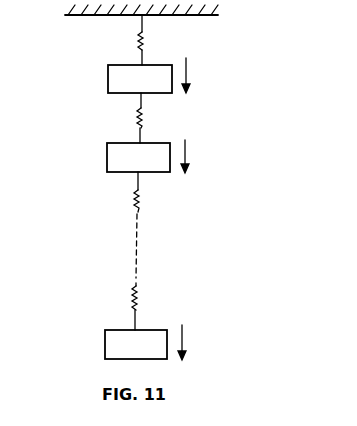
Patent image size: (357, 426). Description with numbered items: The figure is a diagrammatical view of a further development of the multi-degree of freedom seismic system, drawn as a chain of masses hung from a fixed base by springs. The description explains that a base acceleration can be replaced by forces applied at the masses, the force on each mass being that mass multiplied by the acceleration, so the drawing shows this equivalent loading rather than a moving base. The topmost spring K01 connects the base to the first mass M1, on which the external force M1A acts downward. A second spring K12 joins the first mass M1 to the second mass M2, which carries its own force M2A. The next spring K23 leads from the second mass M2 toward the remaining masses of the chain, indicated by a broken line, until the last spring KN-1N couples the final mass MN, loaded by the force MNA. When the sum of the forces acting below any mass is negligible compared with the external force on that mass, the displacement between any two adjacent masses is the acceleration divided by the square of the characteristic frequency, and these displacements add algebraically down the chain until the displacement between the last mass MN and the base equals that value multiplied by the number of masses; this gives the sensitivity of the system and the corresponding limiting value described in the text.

The spring between support and mass 1 K01 is at (118, 40).
The mass 1 M1 is at (125, 79).
The force on mass 1 M1A is at (208, 75).
The spring between mass 1 and mass 2 K12 is at (119, 118).
The mass 2 M2 is at (120, 157).
The force on mass 2 M2A is at (208, 156).
The spring between mass 2 and mass 3 K23 is at (115, 225).
The spring between mass N-1 and mass N KN-1N is at (94, 306).
The mass N MN is at (116, 344).
The force on mass N MNA is at (208, 342).